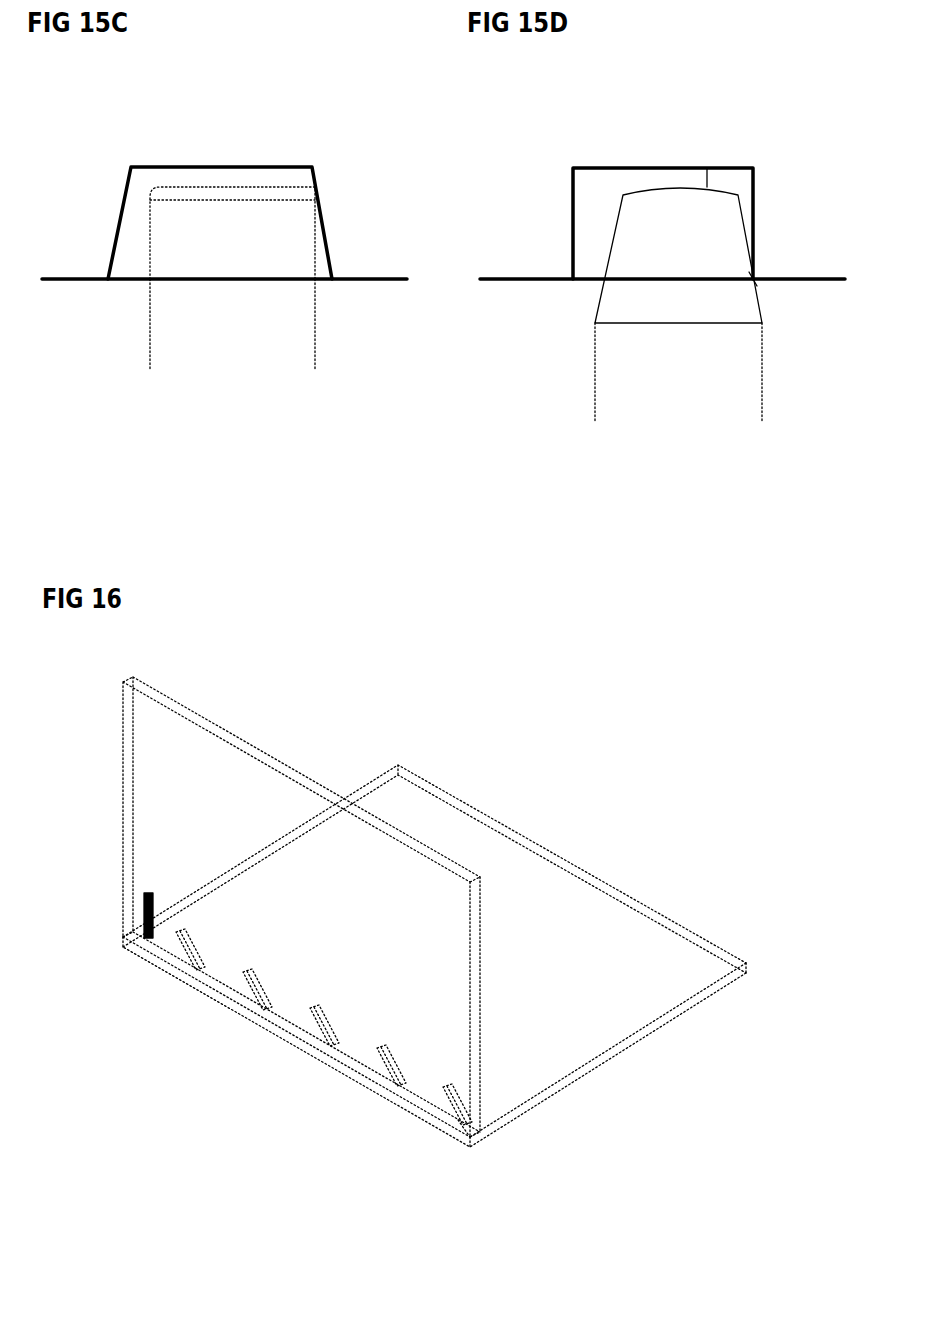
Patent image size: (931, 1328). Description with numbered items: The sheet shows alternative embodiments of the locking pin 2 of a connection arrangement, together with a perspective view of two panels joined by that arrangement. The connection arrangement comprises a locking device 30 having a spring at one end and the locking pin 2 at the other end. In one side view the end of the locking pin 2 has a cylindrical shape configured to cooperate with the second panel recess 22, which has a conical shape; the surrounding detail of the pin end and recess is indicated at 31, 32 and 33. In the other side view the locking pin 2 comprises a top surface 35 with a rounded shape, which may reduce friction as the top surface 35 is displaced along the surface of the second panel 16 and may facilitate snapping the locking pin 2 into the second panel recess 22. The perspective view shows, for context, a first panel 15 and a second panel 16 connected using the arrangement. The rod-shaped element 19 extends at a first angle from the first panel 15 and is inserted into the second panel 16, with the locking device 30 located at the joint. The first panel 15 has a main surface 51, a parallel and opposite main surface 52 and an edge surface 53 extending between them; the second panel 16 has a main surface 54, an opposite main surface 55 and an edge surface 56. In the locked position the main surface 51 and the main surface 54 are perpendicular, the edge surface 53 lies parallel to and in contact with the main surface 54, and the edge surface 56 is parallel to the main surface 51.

In FIG. 15C, the locking pin 2 is at (190, 302).
In FIG. 15D, the locking pin 2 is at (635, 385).
In FIG. 15C, the first panel 15 is at (361, 331).
In FIG. 15D, the first panel 15 is at (697, 357).
In FIG. 16, the first panel 15 is at (304, 913).
In FIG. 15C, the second panel 16 is at (193, 191).
In FIG. 15D, the second panel 16 is at (632, 181).
In FIG. 16, the second panel 16 is at (451, 956).
In FIG. 16, the rod-shaped element 19 is at (250, 985).
In FIG. 15C, the second panel recess 22 is at (173, 172).
In FIG. 15D, the second panel recess 22 is at (610, 173).
In FIG. 16, the locking device 30 is at (138, 918).
In FIG. 15D, the lower portion 31 is at (673, 292).
In FIG. 15C, the corner 32 is at (318, 190).
In FIG. 15D, the corner 32 is at (753, 280).
In FIG. 15C, the insert 33 is at (272, 213).
In FIG. 15D, the insert 33 is at (753, 280).
In FIG. 15D, the top surface 35 is at (707, 168).
In FIG. 16, the main surface 51 is at (480, 978).
In FIG. 16, the opposite main surface 52 is at (458, 1072).
In FIG. 16, the edge surface 53 is at (430, 1093).
In FIG. 16, the main surface 54 is at (700, 975).
In FIG. 16, the opposite main surface 55 is at (662, 1023).
In FIG. 16, the edge surface 56 is at (367, 1070).